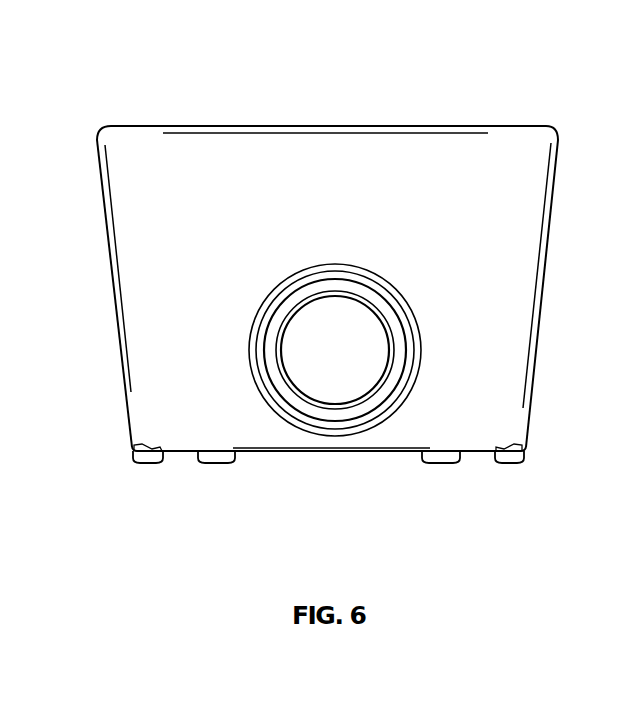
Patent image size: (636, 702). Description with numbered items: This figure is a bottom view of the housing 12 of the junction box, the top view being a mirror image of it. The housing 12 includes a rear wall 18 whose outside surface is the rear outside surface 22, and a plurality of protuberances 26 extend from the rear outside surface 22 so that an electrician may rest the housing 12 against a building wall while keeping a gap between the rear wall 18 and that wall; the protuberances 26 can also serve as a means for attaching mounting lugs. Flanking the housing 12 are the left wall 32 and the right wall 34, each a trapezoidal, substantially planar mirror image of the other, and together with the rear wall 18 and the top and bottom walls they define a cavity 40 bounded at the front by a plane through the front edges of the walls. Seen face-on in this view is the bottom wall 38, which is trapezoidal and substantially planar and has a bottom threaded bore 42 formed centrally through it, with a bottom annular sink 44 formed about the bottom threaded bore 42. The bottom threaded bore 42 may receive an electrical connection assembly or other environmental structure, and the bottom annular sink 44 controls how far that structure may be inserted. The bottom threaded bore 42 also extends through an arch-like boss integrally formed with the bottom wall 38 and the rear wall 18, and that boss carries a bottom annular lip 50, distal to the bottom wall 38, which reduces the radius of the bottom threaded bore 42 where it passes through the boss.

The housing 12 is at (112, 58).
The rear wall 18 is at (312, 462).
The rear outside surface 22 is at (330, 452).
The protuberances 26 is at (150, 459).
The left wall 32 is at (110, 282).
The right wall 34 is at (550, 247).
The bottom wall 38 is at (522, 310).
The cavity 40 is at (330, 172).
The bottom threaded bore 42 is at (362, 323).
The bottom annular sink 44 is at (300, 283).
The bottom annular lip 50 is at (355, 290).